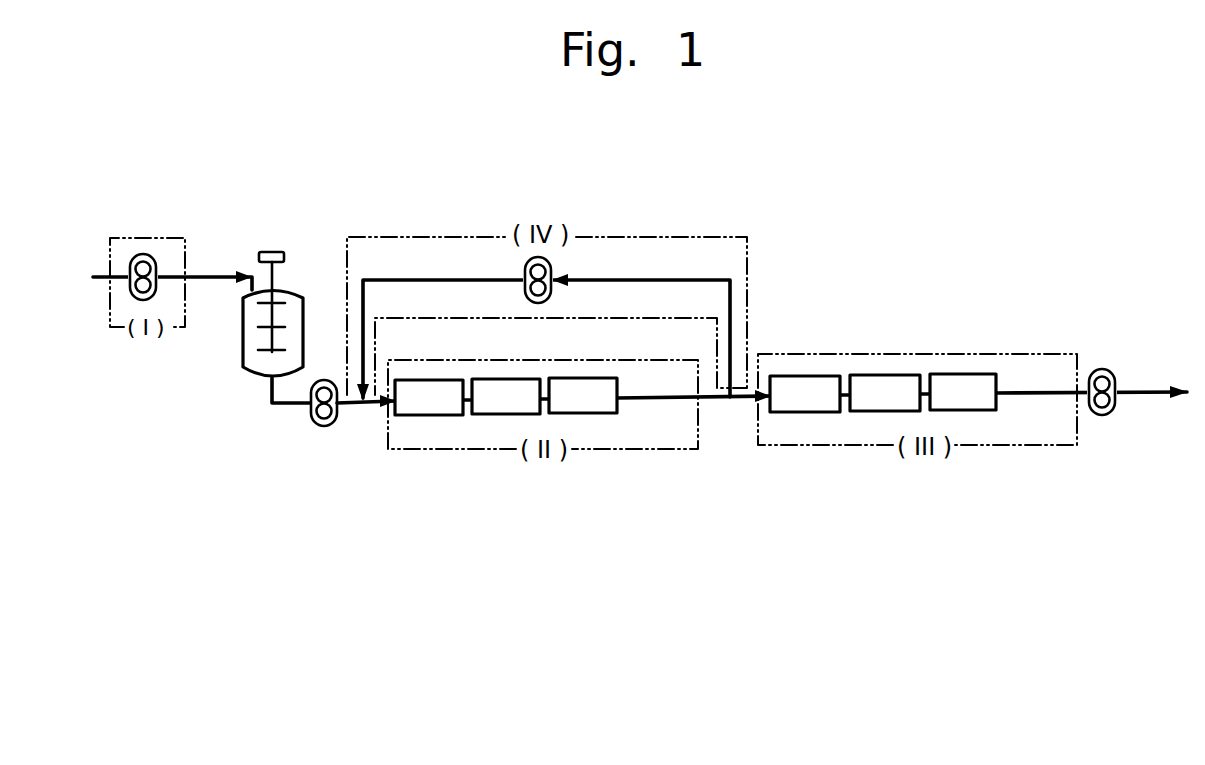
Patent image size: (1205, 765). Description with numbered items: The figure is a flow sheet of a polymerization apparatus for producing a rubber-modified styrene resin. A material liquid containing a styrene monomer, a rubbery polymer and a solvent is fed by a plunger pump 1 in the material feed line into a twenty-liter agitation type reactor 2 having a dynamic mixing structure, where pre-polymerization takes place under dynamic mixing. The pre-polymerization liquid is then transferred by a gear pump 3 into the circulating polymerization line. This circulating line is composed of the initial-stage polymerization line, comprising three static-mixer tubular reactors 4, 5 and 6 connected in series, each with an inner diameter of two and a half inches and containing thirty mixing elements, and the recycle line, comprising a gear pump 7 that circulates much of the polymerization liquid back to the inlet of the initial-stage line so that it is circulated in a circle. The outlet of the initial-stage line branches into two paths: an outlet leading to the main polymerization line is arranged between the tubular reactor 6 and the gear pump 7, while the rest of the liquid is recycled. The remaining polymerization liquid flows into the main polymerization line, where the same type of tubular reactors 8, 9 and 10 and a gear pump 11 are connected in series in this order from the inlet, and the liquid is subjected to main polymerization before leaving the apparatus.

The plunger pump 1 is at (156, 258).
The agitation type reactor 2 is at (243, 355).
The gear pump 3 is at (331, 426).
The tubular reactor 4 is at (429, 397).
The tubular reactor 5 is at (506, 396).
The tubular reactor 6 is at (583, 395).
The gear pump 7 is at (556, 268).
The tubular reactor 8 is at (805, 394).
The tubular reactor 9 is at (885, 393).
The tubular reactor 10 is at (963, 392).
The gear pump 11 is at (1113, 413).